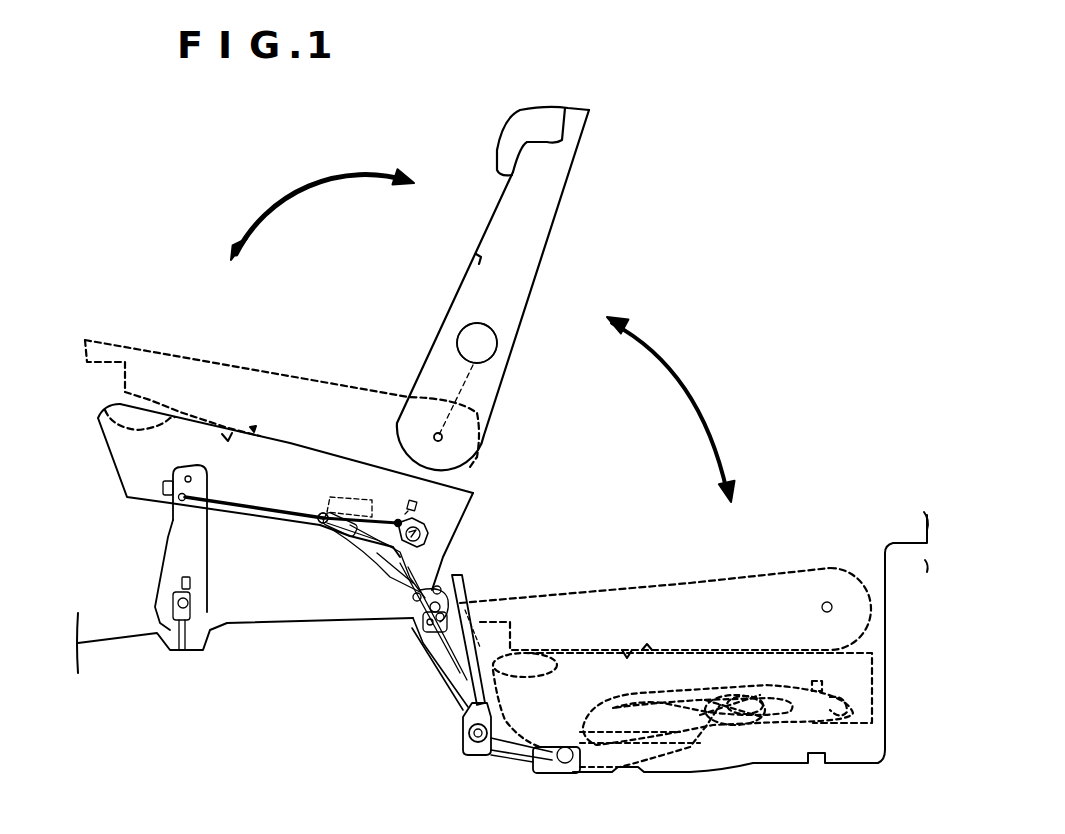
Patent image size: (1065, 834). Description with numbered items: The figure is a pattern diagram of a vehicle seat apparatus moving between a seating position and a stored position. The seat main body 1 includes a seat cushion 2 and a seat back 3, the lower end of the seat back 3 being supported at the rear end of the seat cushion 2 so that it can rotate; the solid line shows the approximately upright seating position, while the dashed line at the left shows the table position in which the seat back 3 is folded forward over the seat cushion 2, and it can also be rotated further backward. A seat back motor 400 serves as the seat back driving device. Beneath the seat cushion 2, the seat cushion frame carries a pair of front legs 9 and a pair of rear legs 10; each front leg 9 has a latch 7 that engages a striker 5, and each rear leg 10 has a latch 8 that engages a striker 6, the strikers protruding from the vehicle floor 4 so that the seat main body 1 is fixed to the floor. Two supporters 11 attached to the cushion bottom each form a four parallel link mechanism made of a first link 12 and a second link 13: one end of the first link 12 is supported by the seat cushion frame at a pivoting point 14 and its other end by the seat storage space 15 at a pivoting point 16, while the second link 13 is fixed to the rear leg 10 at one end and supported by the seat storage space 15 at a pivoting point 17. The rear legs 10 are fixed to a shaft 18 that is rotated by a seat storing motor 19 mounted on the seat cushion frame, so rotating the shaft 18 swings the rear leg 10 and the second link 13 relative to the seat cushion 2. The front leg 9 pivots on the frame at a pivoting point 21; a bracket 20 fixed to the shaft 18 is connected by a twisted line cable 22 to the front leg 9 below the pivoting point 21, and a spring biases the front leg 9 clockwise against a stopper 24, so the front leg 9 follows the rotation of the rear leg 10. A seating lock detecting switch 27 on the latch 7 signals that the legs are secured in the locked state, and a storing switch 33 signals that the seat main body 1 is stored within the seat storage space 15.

The seat main body 1 is at (217, 231).
The seat cushion 2 is at (100, 444).
The seat back 3 is at (552, 243).
The vehicle floor 4 is at (120, 630).
The striker 5 is at (182, 655).
The striker 6 is at (435, 638).
The latch 7 is at (198, 608).
The latch 8 is at (419, 601).
The front leg 9 is at (207, 555).
The rear leg 10 is at (440, 562).
The supporter 11 is at (485, 662).
The first link 12 is at (387, 560).
The second link 13 is at (492, 757).
The pivoting point 14 is at (320, 523).
The seat storage space 15 is at (880, 573).
The pivoting point 16 is at (463, 740).
The pivoting point 17 is at (540, 765).
The shaft 18 is at (430, 530).
The seat storing motor 19 is at (330, 497).
The bracket 20 is at (398, 521).
The pivoting point 21 is at (191, 480).
The twisted line cable 22 is at (300, 522).
The stopper 24 is at (163, 487).
The seating lock detecting switch 27 is at (182, 580).
The storing switch 33 is at (417, 498).
The seat back motor 400 is at (497, 343).